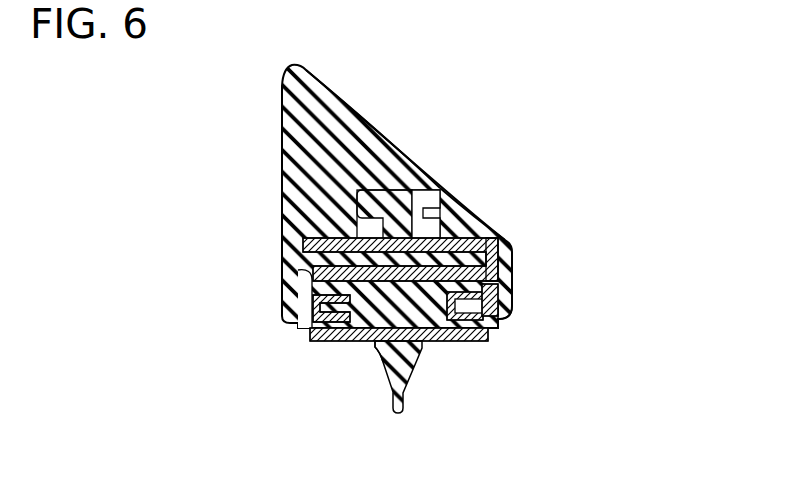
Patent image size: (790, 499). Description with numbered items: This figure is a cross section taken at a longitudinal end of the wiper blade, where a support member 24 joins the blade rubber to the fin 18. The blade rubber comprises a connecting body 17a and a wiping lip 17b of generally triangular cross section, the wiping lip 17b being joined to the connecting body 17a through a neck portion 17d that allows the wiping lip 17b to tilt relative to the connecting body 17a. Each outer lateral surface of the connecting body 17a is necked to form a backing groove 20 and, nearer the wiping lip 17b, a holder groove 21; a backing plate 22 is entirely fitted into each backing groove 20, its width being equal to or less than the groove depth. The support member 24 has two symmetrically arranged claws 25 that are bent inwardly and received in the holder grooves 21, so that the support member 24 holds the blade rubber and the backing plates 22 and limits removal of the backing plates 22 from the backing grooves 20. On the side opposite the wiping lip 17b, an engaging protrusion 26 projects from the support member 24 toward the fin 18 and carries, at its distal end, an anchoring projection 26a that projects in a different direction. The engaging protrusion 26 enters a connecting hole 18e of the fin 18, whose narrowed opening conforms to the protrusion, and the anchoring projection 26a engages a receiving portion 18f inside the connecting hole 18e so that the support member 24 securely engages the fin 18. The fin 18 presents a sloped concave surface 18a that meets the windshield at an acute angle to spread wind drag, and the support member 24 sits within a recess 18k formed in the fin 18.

The connecting body 17a is at (322, 341).
The wiping lip 17b is at (403, 408).
The neck portion 17d is at (374, 346).
The fin 18 is at (282, 90).
The sloped concave surface 18a is at (372, 134).
The connecting hole 18e is at (360, 182).
The receiving portion 18f is at (448, 198).
The recess 18k is at (497, 312).
The backing groove 20 is at (317, 260).
The holder groove 21 is at (455, 321).
The backing plate 22 is at (492, 265).
The support member 24 is at (485, 313).
The claw 25 is at (303, 312).
The engaging protrusion 26 is at (345, 226).
The anchoring projection 26a is at (415, 190).